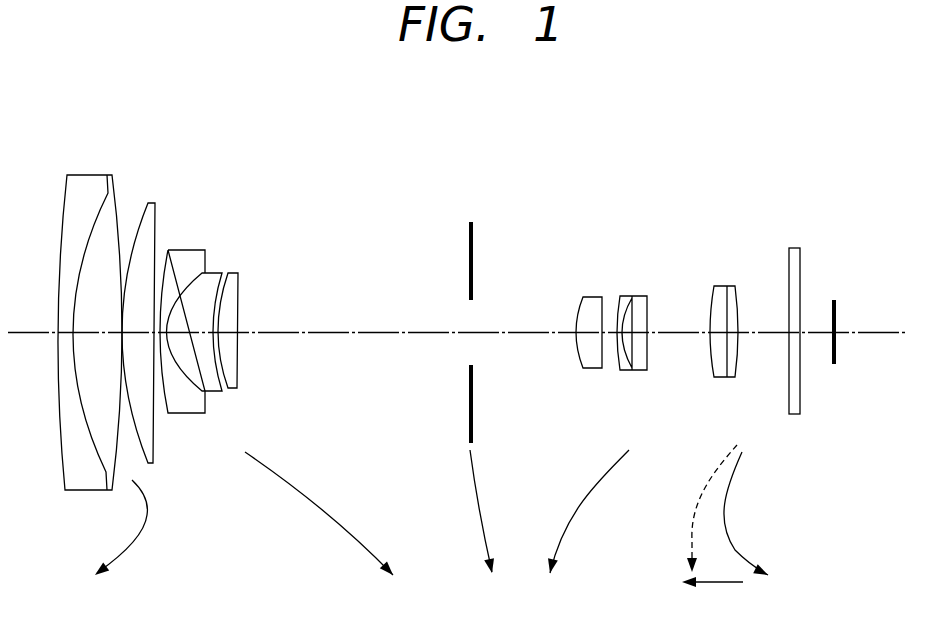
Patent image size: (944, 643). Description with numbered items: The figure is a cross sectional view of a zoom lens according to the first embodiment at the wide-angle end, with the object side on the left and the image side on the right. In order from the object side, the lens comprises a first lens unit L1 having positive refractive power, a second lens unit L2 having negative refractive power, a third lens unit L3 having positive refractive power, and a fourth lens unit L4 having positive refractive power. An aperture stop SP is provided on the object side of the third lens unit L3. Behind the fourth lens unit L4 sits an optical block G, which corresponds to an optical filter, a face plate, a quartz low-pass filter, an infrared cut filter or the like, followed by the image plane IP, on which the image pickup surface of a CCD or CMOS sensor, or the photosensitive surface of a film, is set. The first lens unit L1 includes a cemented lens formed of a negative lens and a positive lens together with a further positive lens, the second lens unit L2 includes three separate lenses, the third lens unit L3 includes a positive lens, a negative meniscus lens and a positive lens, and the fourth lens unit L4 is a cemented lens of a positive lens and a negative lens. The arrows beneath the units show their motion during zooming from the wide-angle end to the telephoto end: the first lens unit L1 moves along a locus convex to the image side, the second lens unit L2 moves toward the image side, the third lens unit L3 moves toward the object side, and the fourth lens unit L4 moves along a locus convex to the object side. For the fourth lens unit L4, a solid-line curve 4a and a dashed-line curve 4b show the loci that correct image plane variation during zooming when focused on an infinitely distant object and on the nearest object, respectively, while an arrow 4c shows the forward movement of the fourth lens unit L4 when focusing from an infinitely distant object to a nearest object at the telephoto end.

The first lens unit L1 is at (162, 143).
The second lens unit L2 is at (257, 187).
The aperture stop SP is at (470, 233).
The third lens unit L3 is at (662, 147).
The fourth lens unit L4 is at (760, 185).
The optical block G is at (797, 248).
The image plane IP is at (845, 300).
The solid-line curve 4a is at (752, 513).
The dashed-line curve 4b is at (695, 508).
The arrow 4c is at (712, 596).